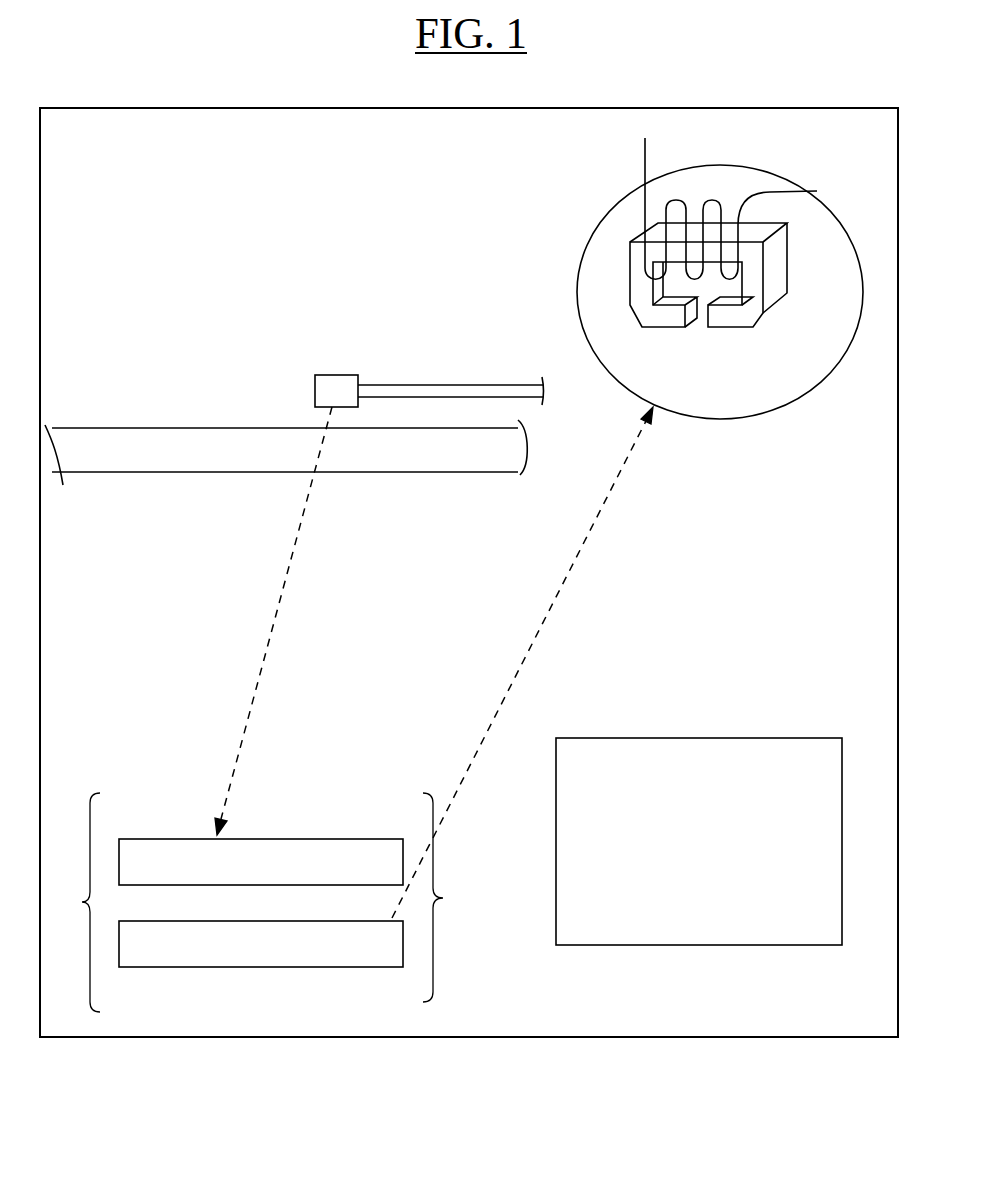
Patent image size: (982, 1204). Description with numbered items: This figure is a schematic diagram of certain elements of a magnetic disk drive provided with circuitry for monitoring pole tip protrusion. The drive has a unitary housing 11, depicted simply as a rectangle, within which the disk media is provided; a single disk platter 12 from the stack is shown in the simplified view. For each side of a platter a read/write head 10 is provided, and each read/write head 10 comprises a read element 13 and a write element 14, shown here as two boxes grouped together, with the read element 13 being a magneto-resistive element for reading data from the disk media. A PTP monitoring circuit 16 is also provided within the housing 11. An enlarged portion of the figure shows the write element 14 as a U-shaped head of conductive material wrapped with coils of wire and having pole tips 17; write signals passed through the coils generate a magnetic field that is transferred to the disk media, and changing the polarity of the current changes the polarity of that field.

The read/write head 10 is at (338, 375).
The housing 11 is at (193, 113).
The disk platter 12 is at (148, 467).
The read element 13 is at (262, 839).
The write element 14 is at (250, 967).
The PTP monitoring circuit 16 is at (622, 740).
The pole tips 17 is at (732, 318).